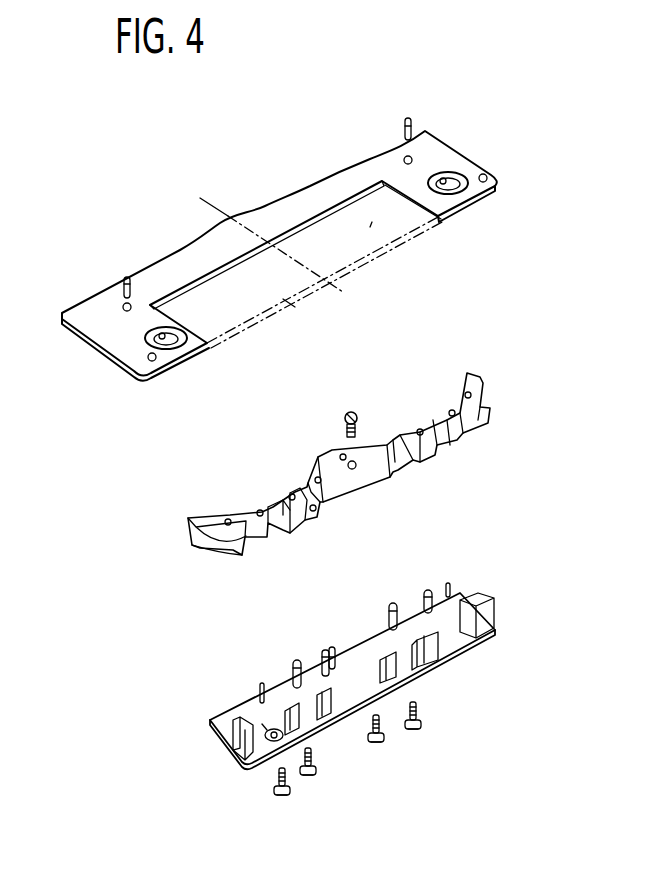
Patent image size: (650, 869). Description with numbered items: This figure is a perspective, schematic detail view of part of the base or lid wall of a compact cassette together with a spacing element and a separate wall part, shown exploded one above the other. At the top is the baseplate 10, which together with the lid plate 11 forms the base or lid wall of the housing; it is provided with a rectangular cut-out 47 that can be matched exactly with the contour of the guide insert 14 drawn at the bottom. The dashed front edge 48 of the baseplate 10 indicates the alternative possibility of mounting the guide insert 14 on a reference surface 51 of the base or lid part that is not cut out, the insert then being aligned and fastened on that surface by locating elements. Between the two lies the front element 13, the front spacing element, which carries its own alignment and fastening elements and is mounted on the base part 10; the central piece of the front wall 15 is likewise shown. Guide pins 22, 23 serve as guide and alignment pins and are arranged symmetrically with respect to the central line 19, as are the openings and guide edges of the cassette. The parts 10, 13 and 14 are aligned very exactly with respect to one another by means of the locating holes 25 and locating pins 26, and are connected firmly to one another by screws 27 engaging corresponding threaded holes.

The baseplate 10 is at (262, 253).
The lid plate 11 is at (122, 325).
The front element 13 is at (327, 464).
The guide insert 14 is at (370, 684).
The central piece of the front wall 15 is at (433, 650).
The central line 19 is at (217, 200).
The guide pin 22 is at (295, 660).
The guide pin 23 is at (331, 647).
The locating hole 25 is at (133, 303).
The locating pin 26 is at (123, 282).
The screw 27 is at (292, 795).
The rectangular cut-out 47 is at (370, 227).
The dashed front edge 48 is at (290, 303).
The reference surface 51 is at (324, 282).